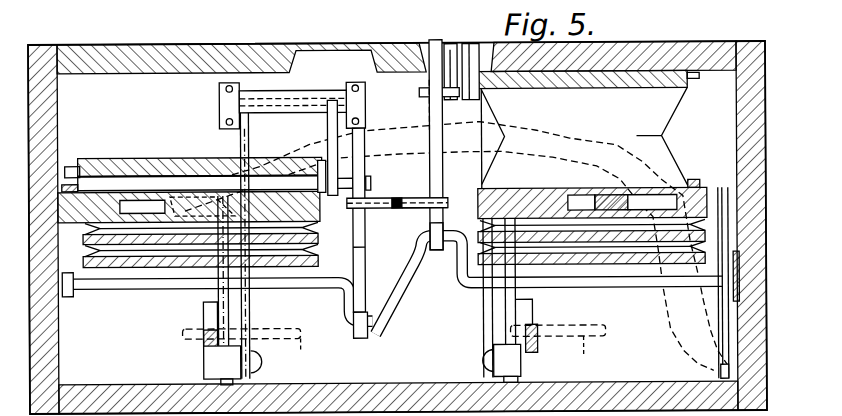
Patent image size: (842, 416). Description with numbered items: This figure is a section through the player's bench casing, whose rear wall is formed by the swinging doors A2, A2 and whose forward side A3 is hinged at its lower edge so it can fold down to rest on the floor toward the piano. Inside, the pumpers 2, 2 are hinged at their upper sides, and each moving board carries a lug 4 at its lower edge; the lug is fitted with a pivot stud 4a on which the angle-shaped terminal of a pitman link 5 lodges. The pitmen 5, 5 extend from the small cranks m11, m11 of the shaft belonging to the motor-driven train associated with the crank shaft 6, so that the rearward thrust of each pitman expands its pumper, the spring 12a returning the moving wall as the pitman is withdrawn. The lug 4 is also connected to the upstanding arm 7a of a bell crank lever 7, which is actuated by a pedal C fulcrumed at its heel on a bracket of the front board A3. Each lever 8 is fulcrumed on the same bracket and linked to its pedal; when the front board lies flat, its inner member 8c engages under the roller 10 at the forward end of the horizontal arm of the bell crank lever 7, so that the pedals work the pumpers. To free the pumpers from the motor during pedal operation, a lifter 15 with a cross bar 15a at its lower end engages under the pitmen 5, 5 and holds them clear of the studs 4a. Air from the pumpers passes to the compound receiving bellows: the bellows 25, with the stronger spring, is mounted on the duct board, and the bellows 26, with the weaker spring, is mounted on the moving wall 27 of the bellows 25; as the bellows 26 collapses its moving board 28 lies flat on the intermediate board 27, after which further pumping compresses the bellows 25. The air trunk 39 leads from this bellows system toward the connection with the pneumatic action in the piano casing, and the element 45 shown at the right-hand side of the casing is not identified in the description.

The swinging door A2 is at (176, 55).
The forward side A3 is at (397, 370).
The pumper 2 is at (145, 172).
The lug 4 is at (306, 160).
The pivot stud 4a is at (421, 92).
The pitman link 5 is at (436, 168).
The crank shaft 6 is at (307, 289).
The bell crank lever 7 is at (250, 345).
The upstanding arm 7a is at (336, 126).
The lever 8 is at (203, 337).
The lever member 8c is at (210, 298).
The roller 10 is at (203, 370).
The spring 12a is at (70, 183).
The lifter 15 is at (397, 198).
The cross bar 15a is at (418, 208).
The bellows 25 is at (143, 225).
The bellows 26 is at (178, 250).
The moving wall 27 is at (353, 247).
The moving board 28 is at (278, 225).
The air trunk 39 is at (605, 150).
The guide bars 45 is at (733, 306).
The pedal C is at (394, 353).
The crank m11 is at (376, 318).